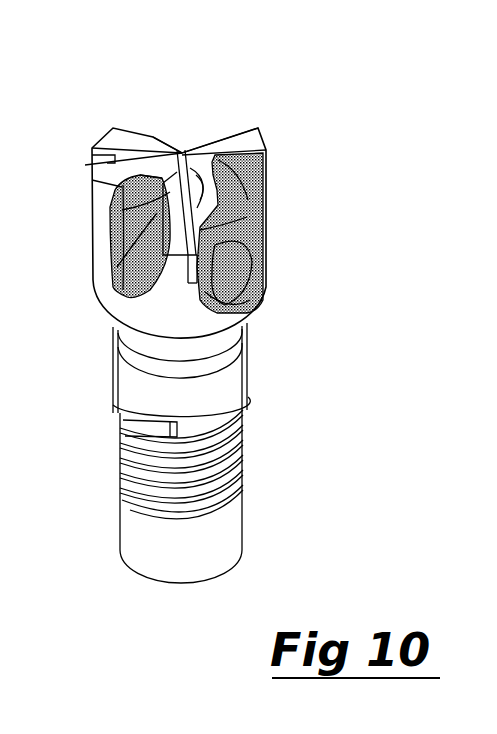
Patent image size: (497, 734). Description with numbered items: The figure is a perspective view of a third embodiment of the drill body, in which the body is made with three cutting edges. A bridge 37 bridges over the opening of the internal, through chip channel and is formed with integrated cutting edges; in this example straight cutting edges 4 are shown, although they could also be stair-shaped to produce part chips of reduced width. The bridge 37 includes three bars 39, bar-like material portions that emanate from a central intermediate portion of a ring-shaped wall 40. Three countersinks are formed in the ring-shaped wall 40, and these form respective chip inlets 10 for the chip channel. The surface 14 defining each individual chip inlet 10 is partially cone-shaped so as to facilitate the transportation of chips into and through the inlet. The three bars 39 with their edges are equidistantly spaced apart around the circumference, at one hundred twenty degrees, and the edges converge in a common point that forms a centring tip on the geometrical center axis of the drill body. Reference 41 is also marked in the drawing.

The cutting edge 4 is at (241, 126).
The chip inlet 10 is at (128, 294).
The surface 14 is at (258, 295).
The bridge 37 is at (183, 150).
The bar 39 is at (145, 175).
The ring-shaped wall 40 is at (92, 231).
The transverse cutting edge 41 is at (180, 150).